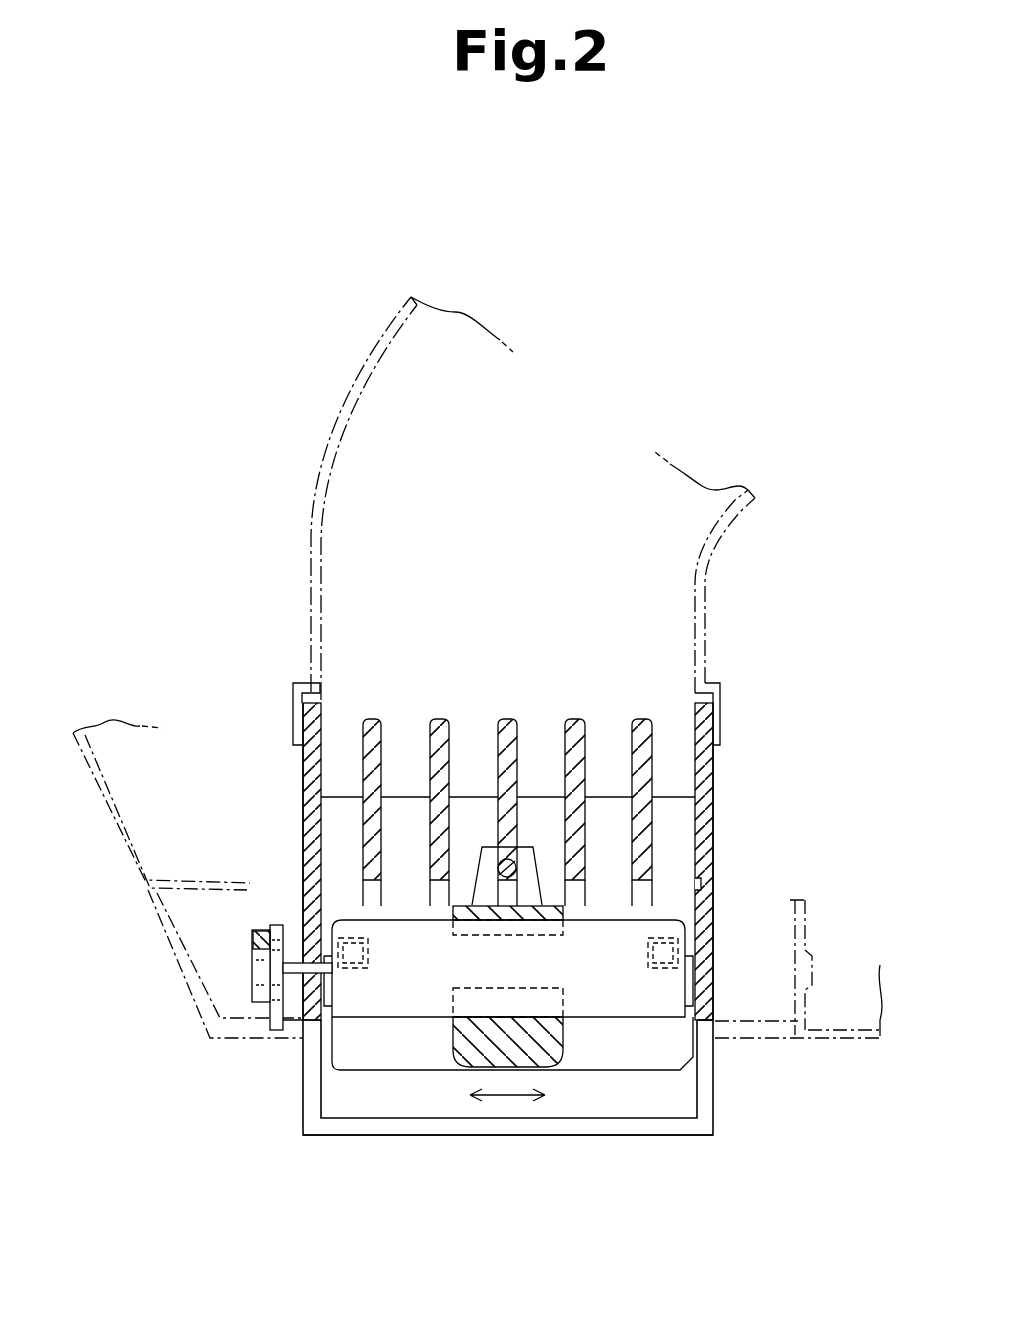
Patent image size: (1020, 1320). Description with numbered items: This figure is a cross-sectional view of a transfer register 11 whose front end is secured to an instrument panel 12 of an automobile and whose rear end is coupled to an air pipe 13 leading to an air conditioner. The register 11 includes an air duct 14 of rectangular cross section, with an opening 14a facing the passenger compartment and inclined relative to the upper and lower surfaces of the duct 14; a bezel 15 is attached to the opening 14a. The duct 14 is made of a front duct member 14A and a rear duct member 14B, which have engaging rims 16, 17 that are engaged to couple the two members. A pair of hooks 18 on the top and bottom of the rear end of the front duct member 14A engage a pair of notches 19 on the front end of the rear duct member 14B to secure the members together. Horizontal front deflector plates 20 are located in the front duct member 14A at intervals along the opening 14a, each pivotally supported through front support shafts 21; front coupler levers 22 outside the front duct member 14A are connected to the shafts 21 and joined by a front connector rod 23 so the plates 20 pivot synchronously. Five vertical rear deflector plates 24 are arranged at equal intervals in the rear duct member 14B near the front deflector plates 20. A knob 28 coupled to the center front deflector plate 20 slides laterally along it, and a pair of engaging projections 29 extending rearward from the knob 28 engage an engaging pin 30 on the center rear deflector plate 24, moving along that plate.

The transfer register 11 is at (300, 776).
The instrument panel 12 is at (882, 1040).
The air pipe 13 is at (318, 520).
The air duct 14 is at (717, 753).
The front duct member 14A is at (713, 996).
The rear duct member 14B is at (715, 798).
The opening 14a is at (713, 1100).
The bezel 15 is at (725, 1040).
The engaging rim 16 is at (713, 883).
The engaging rim 17 is at (713, 890).
The hooks 18 is at (365, 987).
The notches 19 is at (370, 952).
The front deflector plates 20 is at (375, 1025).
The front support shafts 21 is at (286, 958).
The front coupler levers 22 is at (268, 961).
The front connector rod 23 is at (265, 932).
The rear deflector plates 24 is at (584, 716).
The knob 28 is at (543, 1062).
The engaging projections 29 is at (520, 858).
The engaging pin 30 is at (505, 874).